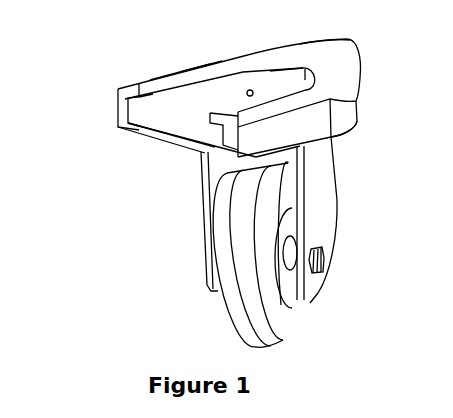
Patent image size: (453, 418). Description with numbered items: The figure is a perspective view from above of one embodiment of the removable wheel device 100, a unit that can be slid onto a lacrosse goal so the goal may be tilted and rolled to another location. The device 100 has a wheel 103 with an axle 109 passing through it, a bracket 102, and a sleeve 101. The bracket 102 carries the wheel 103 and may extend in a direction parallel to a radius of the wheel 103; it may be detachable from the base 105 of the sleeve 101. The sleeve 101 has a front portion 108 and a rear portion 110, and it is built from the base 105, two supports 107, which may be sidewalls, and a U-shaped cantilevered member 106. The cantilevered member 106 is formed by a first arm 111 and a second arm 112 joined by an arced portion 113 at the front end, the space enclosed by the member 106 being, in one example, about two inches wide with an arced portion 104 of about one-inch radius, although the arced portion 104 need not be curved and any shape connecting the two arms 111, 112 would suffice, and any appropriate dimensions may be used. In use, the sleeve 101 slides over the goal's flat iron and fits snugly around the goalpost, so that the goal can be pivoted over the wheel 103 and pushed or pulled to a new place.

The removable wheel device 100 is at (97, 258).
The sleeve 101 is at (238, 111).
The bracket 102 is at (328, 200).
The wheel 103 is at (275, 318).
The arced portion 104 is at (296, 71).
The base 105 is at (183, 136).
The U-shaped cantilevered member 106 is at (173, 71).
The supports 107 is at (117, 106).
The front portion 108 is at (356, 139).
The axle 109 is at (334, 260).
The rear portion 110 is at (257, 154).
The first arm 111 is at (290, 101).
The second arm 112 is at (200, 64).
The arced portion 113 is at (333, 72).